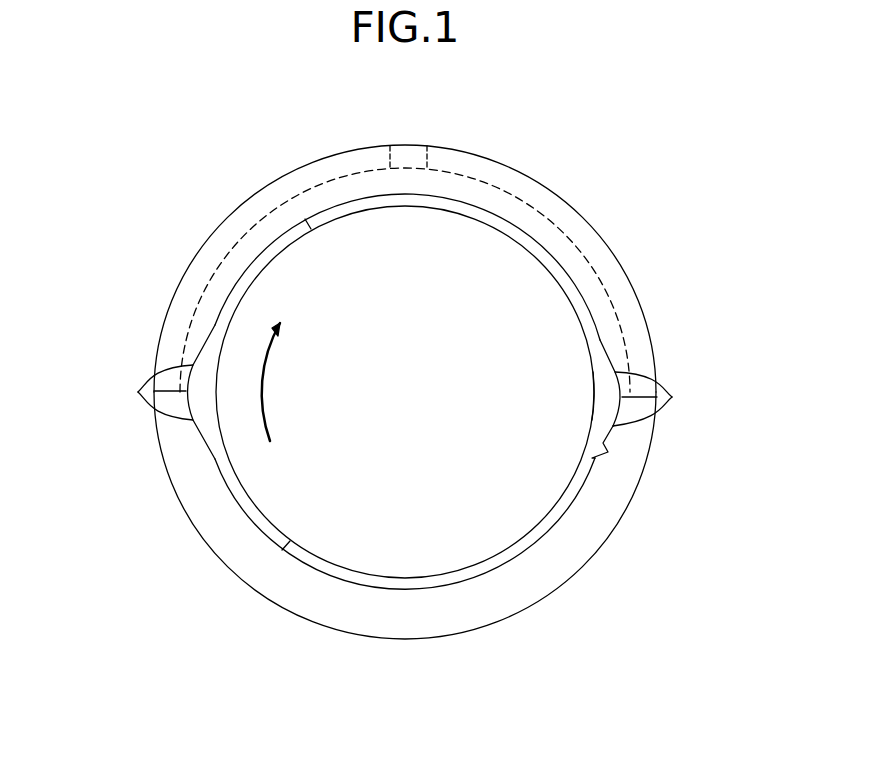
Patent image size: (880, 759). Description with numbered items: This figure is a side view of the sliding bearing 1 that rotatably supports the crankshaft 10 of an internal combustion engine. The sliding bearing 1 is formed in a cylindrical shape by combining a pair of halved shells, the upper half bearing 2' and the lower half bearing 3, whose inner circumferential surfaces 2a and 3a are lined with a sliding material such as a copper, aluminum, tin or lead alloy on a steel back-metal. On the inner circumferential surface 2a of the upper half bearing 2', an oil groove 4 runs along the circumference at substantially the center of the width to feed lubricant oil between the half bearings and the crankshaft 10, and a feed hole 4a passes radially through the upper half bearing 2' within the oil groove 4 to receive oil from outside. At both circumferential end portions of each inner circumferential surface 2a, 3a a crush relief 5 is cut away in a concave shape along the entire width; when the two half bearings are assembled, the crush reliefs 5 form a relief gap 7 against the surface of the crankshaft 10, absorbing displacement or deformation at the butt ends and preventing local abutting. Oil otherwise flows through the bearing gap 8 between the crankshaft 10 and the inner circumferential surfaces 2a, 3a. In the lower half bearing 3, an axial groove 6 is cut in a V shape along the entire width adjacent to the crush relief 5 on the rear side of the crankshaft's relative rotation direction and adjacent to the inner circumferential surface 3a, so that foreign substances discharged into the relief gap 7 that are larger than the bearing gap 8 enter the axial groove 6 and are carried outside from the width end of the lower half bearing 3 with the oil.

The sliding bearing 1 is at (605, 147).
The upper half bearing 2' is at (406, 236).
The inner circumferential surface of the upper half bearing 2a is at (305, 218).
The lower half bearing 3 is at (573, 582).
The inner circumferential surface of the lower half bearing 3a is at (284, 548).
The oil groove 4 is at (470, 177).
The feed hole 4a is at (390, 162).
The crush relief 5 is at (138, 392).
The axial groove 6 is at (608, 452).
The relief gap 7 is at (602, 396).
The bearing gap 8 is at (558, 508).
The crankshaft 10 is at (445, 547).